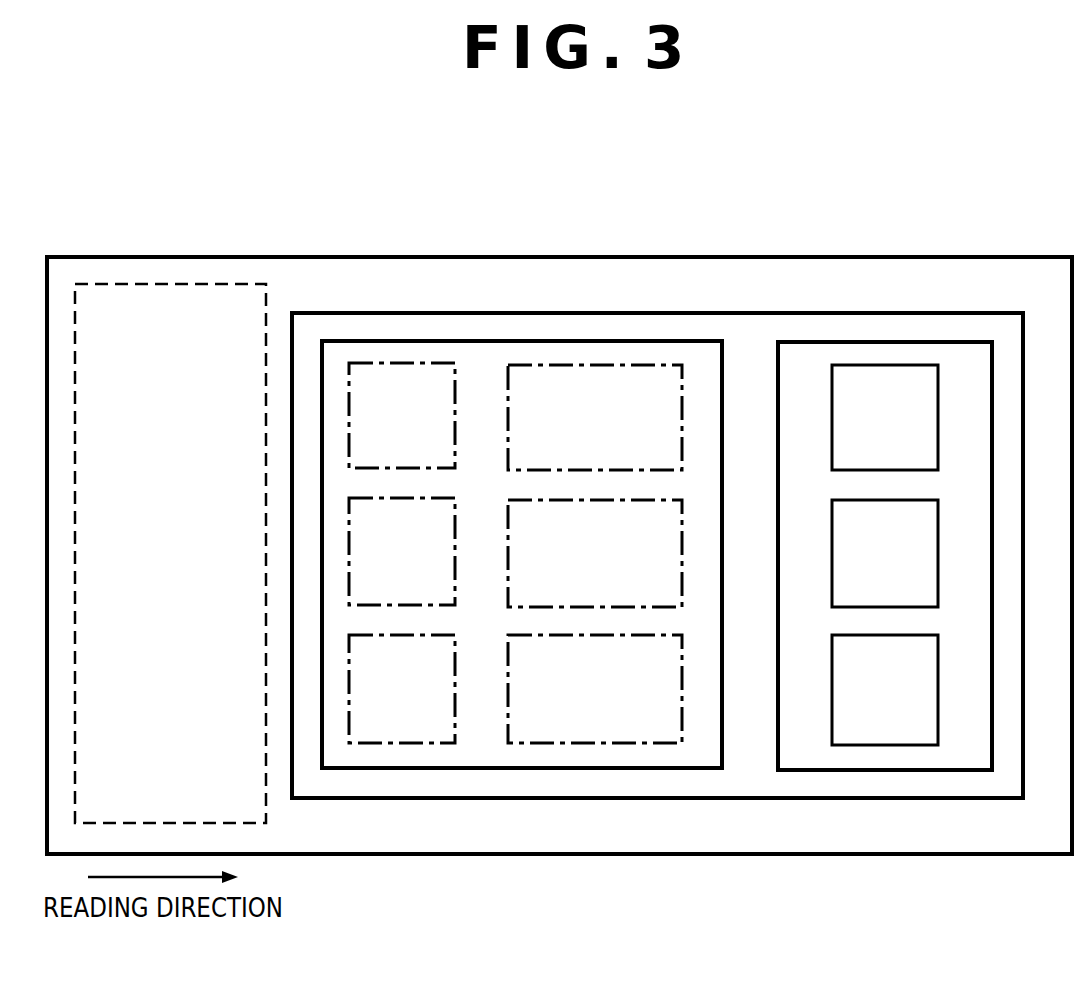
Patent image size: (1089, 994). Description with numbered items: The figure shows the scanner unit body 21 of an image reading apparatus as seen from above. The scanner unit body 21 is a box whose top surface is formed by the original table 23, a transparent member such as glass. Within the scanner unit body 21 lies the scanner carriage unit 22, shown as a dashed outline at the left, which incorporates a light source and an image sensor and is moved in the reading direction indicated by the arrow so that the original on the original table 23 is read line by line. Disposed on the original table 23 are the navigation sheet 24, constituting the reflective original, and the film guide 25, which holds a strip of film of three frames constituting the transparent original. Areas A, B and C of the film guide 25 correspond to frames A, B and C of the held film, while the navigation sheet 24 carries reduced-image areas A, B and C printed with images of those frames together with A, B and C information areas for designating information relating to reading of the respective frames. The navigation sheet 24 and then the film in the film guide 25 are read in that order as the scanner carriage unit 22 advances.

The scanner unit body 21 is at (500, 257).
The scanner carriage unit 22 is at (93, 283).
The original table 23 is at (887, 313).
The navigation sheet 24 is at (365, 768).
The film guide 25 is at (795, 770).